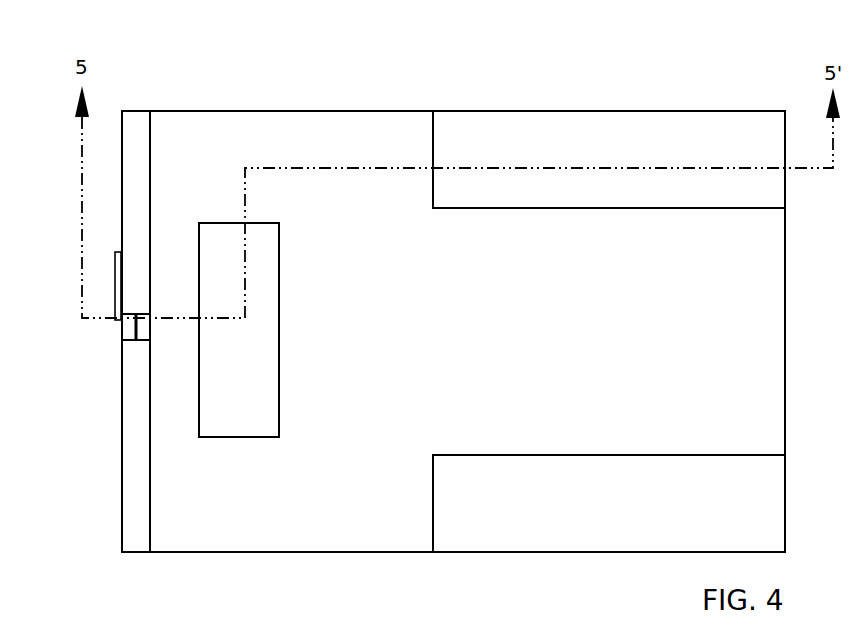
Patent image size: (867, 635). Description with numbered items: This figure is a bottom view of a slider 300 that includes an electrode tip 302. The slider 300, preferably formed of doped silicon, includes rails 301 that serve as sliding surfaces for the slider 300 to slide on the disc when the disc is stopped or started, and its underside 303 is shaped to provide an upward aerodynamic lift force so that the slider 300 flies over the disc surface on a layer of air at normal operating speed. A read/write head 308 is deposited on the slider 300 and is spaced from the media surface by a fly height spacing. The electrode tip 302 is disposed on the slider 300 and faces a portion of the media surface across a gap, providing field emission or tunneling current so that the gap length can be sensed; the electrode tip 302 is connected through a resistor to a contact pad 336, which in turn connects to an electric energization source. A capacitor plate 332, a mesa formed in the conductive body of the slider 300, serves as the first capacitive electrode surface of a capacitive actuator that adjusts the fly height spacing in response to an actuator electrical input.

The slider 300 is at (340, 110).
The rails 301 is at (488, 208).
The underside 303 is at (518, 345).
The capacitor plate 332 is at (257, 347).
The contact pad 336 is at (115, 270).
The electrode tip 302 is at (123, 333).
The read/write head 308 is at (123, 338).